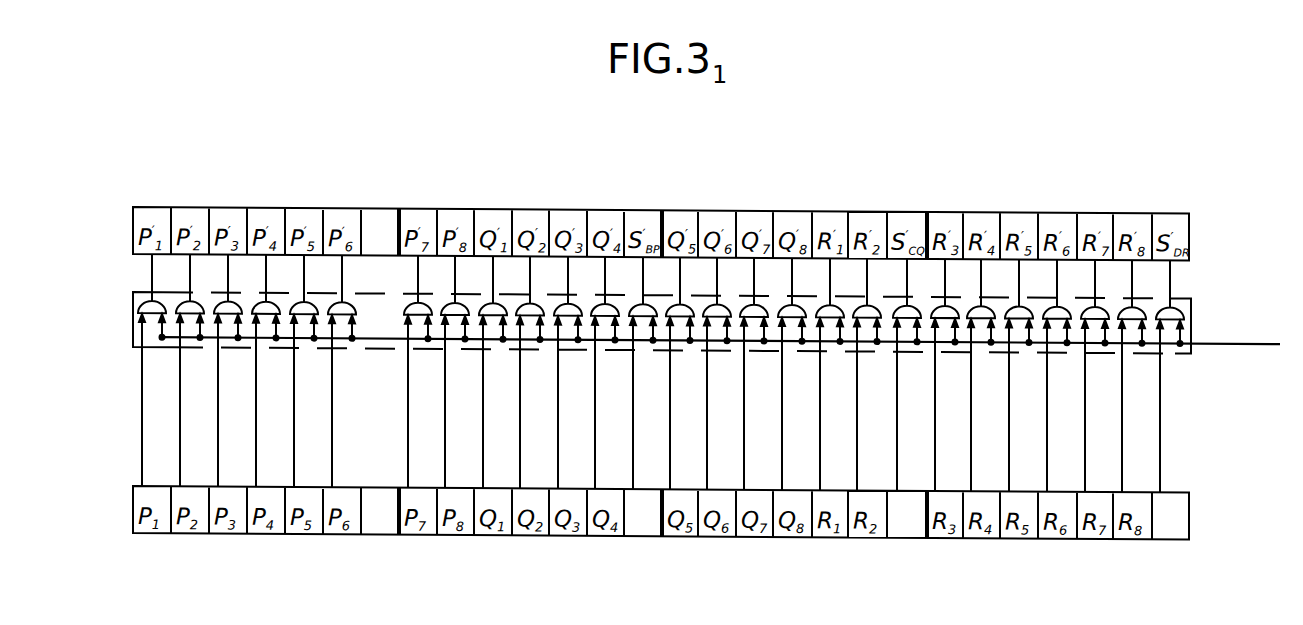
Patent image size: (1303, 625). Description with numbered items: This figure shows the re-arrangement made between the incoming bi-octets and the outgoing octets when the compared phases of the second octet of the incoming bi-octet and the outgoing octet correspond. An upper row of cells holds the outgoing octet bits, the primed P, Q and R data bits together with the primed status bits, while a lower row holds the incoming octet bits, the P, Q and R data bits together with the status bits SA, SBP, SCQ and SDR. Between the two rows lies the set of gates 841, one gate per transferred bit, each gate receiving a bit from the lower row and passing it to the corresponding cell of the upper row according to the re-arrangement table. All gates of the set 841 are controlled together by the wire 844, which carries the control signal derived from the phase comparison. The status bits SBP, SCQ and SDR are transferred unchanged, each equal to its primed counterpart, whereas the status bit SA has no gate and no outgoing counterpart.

The set of gates 841 is at (132, 336).
The control wire 844 is at (1277, 347).
The status bit of octet A SA is at (376, 510).
The status bit of octet B and envelope P SBP is at (640, 512).
The status bit of octet C and envelope Q SCQ is at (904, 514).
The status bit of octet D and envelope R SDR is at (1169, 515).